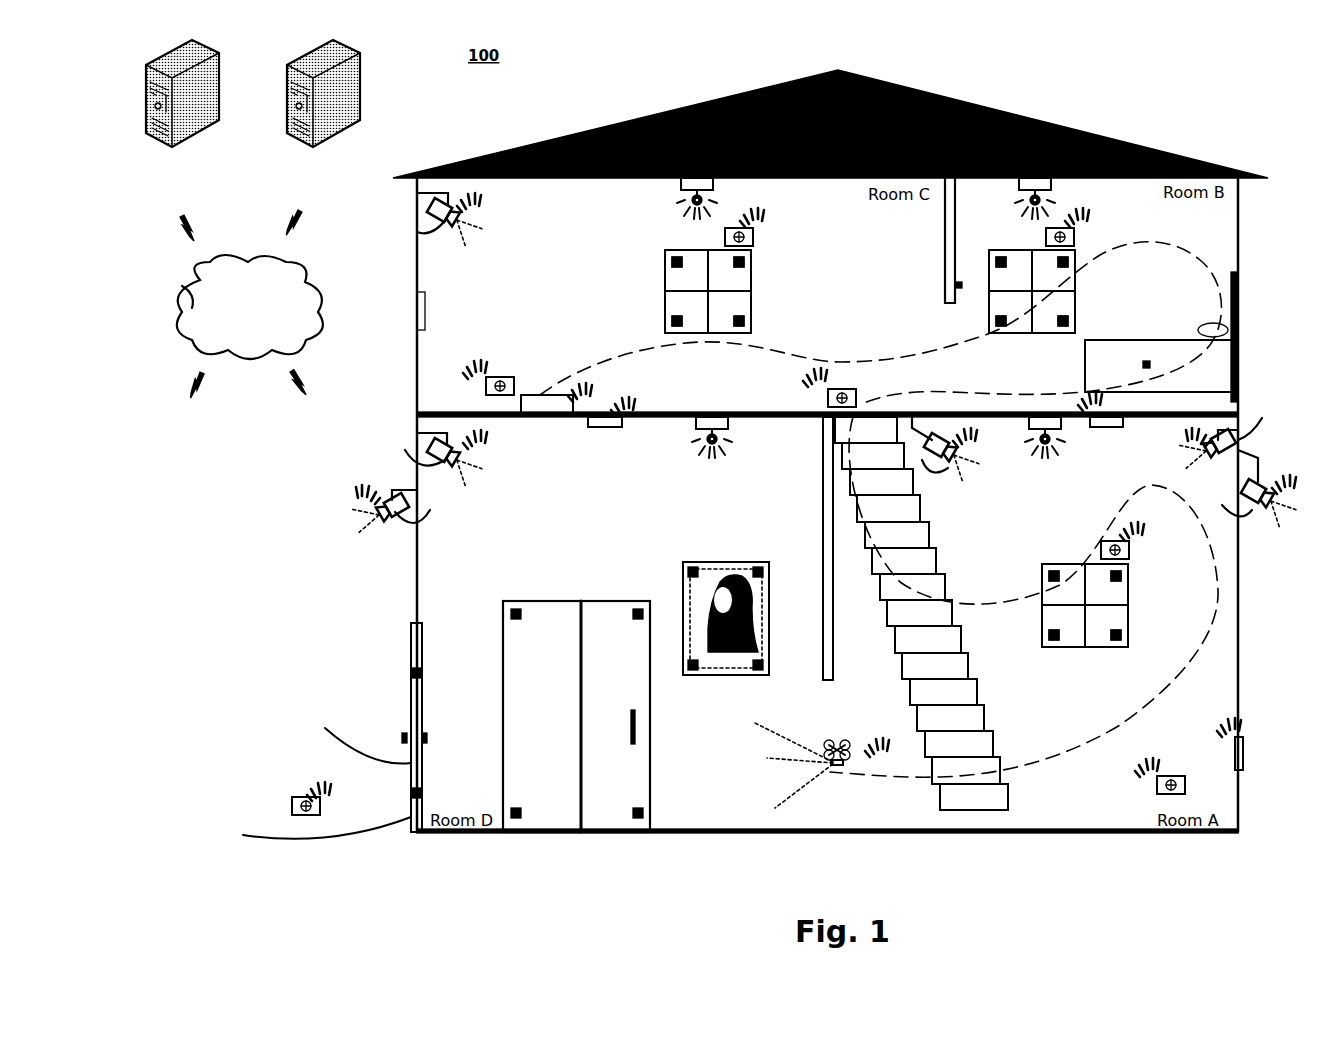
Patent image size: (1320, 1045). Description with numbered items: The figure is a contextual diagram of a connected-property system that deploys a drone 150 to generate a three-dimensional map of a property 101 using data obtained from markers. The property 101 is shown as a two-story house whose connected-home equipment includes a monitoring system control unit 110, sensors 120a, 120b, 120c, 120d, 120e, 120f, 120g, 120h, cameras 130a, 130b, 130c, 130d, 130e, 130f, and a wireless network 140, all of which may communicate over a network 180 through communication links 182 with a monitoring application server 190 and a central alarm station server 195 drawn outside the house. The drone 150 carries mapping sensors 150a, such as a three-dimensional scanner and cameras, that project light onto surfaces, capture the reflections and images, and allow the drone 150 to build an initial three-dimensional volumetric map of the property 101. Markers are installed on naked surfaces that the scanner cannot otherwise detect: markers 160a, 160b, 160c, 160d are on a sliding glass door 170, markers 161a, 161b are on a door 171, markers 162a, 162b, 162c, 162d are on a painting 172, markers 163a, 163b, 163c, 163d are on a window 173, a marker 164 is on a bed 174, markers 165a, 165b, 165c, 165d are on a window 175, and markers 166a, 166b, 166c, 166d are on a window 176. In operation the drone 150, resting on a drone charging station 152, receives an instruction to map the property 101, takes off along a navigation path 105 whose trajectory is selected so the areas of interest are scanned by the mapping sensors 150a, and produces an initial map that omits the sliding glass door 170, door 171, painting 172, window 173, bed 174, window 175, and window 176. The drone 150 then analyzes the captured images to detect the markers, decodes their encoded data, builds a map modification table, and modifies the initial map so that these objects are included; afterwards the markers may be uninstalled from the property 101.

The property 101 is at (1170, 148).
The navigation path 105 is at (812, 362).
The monitoring system control unit 110 is at (1232, 760).
The sensor 120a is at (1158, 790).
The sensor 120b is at (1129, 552).
The sensor 120c is at (1123, 418).
The sensor 120d is at (1074, 240).
The sensor 120e is at (857, 400).
The sensor 120f is at (752, 240).
The sensor 120g is at (512, 378).
The sensor 120h is at (605, 427).
The camera 130a is at (946, 457).
The camera 130b is at (1233, 435).
The camera 130c is at (1247, 490).
The camera 130d is at (412, 230).
The camera 130e is at (424, 458).
The camera 130f is at (404, 509).
The wireless network 140 is at (768, 213).
The drone 150 is at (838, 740).
The mapping sensors 150a is at (838, 765).
The drone charging station 152 is at (538, 417).
The marker 160a is at (644, 812).
The marker 160b is at (640, 608).
The marker 160c is at (514, 608).
The marker 160d is at (512, 812).
The marker 161a is at (422, 792).
The marker 161b is at (422, 672).
The marker 162a is at (764, 665).
The marker 162b is at (764, 572).
The marker 162c is at (688, 572).
The marker 162d is at (688, 665).
The marker 163a is at (1118, 642).
The marker 163b is at (1116, 582).
The marker 163c is at (1049, 575).
The marker 163d is at (1049, 636).
The marker 164 is at (1146, 360).
The marker 165a is at (1064, 330).
The marker 165b is at (1064, 268).
The marker 165c is at (996, 260).
The marker 165d is at (996, 322).
The marker 166a is at (770, 326).
The marker 166b is at (740, 268).
The marker 166c is at (676, 256).
The marker 166d is at (672, 322).
The sliding glass door 170 is at (518, 681).
The door 171 is at (412, 704).
The painting 172 is at (712, 570).
The window 173 is at (1078, 640).
The bed 174 is at (1172, 345).
The window 175 is at (970, 300).
The window 176 is at (672, 282).
The network 180 is at (184, 292).
The communication links 182 is at (190, 225).
The monitoring application server 190 is at (206, 62).
The central alarm station server 195 is at (346, 62).